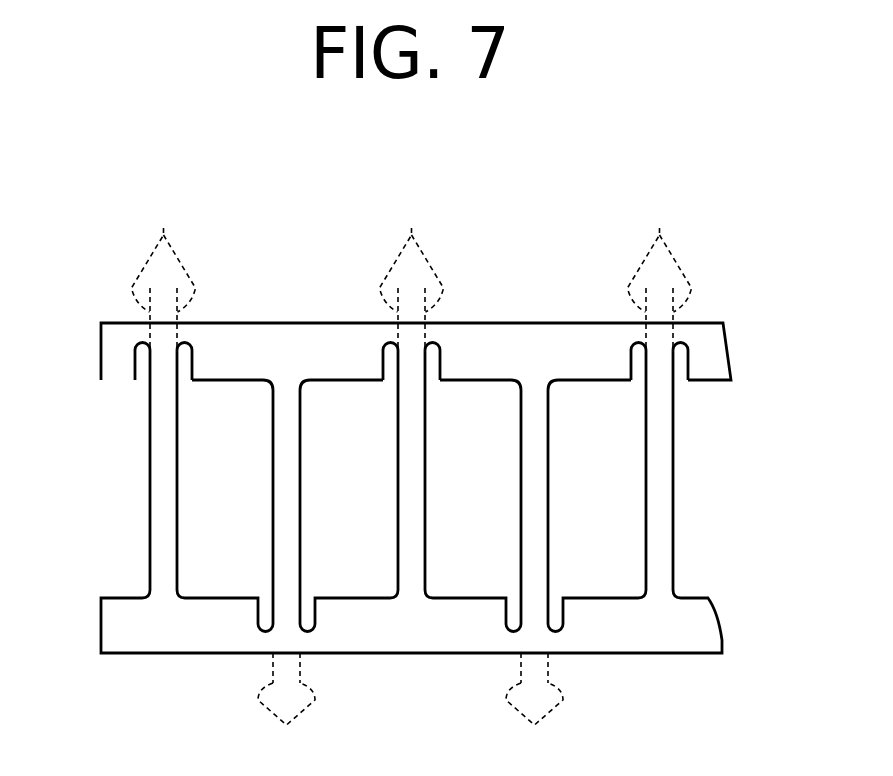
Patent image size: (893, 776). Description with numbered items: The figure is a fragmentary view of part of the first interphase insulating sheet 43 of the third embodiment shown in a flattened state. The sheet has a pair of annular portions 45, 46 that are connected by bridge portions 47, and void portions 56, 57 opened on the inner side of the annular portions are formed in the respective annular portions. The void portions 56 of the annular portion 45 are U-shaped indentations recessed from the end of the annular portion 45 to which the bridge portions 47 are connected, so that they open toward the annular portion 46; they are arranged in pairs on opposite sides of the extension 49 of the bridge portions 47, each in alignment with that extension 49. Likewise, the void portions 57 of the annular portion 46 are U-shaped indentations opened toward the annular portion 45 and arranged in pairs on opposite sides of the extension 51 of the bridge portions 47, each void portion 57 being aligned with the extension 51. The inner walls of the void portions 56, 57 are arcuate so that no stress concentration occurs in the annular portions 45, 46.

The first interphase insulating sheet 43 is at (543, 290).
The annular portion 45 is at (292, 342).
The annular portion 46 is at (188, 638).
The bridge portion 47 is at (275, 485).
The extension 49 is at (412, 276).
The extension 51 is at (410, 709).
The void portion 56 is at (133, 360).
The void portion 57 is at (262, 606).